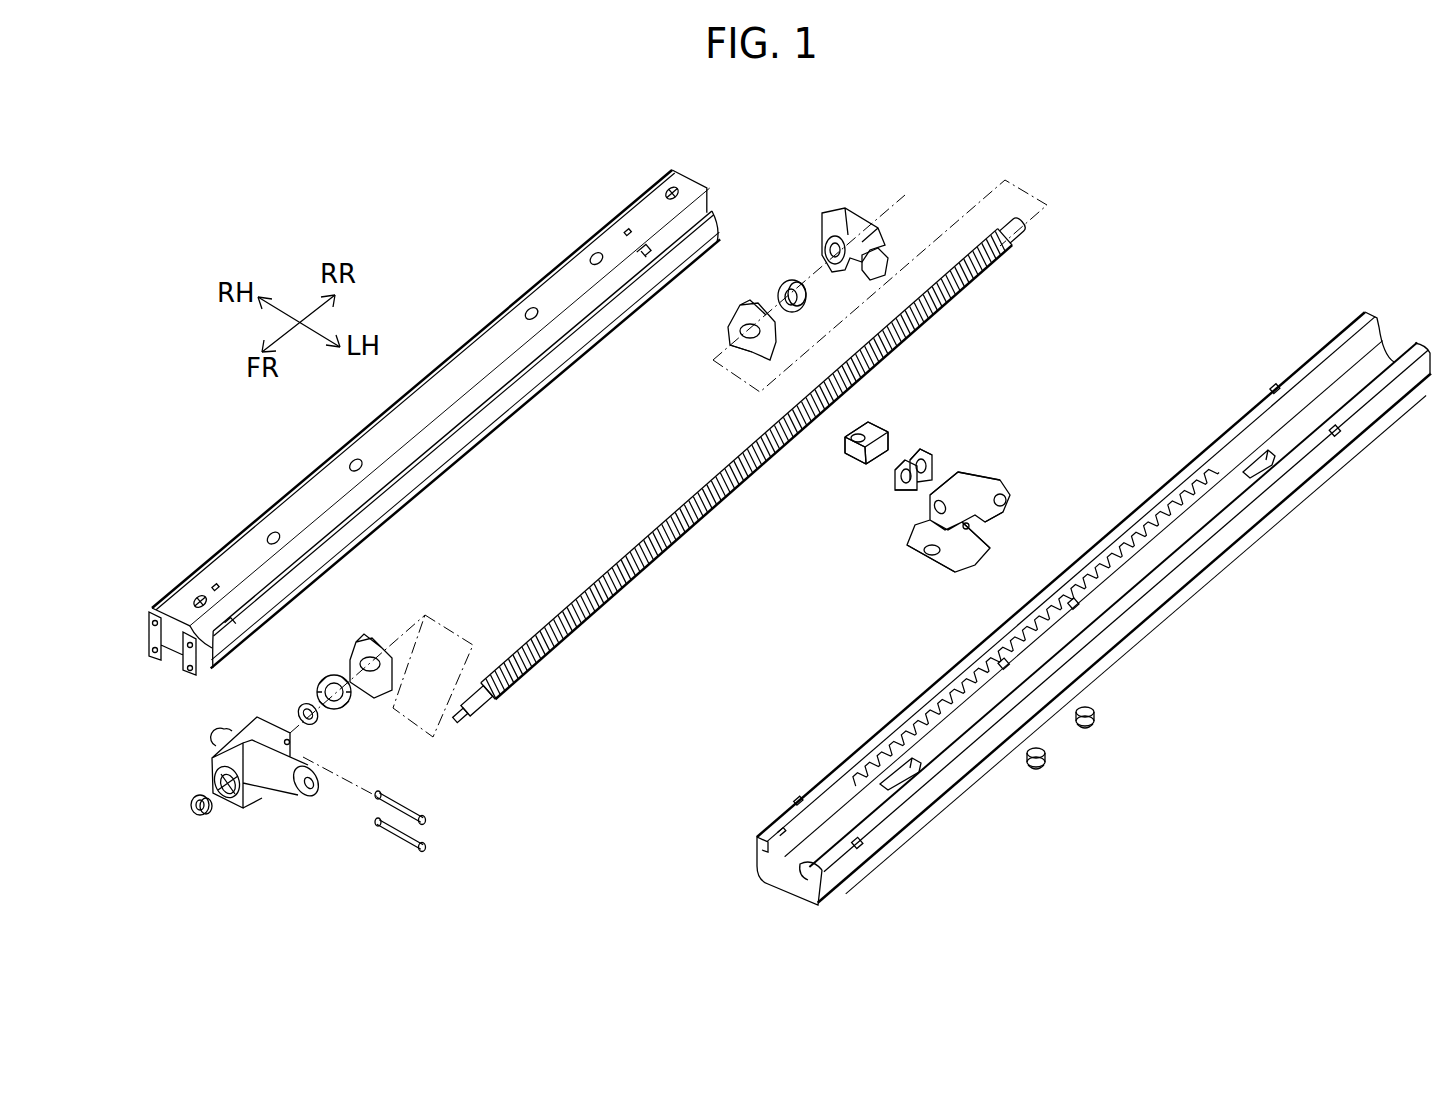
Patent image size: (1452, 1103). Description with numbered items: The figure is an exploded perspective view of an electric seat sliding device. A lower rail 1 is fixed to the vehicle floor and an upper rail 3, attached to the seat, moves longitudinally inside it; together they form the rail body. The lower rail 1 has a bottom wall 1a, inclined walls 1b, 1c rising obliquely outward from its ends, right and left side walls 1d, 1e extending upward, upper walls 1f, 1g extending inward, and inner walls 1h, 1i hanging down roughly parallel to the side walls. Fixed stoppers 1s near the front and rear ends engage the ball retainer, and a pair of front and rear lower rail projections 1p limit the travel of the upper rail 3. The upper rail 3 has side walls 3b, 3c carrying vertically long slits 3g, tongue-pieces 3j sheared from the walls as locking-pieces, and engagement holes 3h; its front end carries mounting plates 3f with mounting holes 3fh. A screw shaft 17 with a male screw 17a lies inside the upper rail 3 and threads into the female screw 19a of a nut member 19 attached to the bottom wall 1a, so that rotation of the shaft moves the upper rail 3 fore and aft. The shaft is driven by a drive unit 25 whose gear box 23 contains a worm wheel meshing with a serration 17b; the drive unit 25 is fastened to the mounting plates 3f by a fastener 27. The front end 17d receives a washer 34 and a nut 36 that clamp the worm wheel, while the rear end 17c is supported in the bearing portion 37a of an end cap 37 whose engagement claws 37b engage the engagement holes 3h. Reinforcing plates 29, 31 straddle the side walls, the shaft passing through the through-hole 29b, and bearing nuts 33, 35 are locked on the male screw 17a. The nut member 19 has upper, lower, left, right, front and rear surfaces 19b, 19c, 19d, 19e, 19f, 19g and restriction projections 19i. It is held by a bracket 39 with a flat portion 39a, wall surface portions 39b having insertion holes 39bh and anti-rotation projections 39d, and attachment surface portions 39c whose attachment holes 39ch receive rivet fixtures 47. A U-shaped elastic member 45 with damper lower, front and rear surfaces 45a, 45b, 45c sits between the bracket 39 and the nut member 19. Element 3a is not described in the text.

The lower rail 1 is at (1315, 352).
The bottom wall 1a is at (950, 772).
The inclined wall 1b is at (820, 905).
The inclined wall 1c is at (758, 872).
The side wall 1d is at (1240, 530).
The side wall 1e is at (758, 845).
The upper wall 1f is at (1305, 452).
The upper wall 1g is at (1237, 425).
The inner wall 1h is at (806, 888).
The inner wall 1i is at (780, 835).
The lower rail projection 1p is at (895, 760).
The fixed stopper 1s is at (1272, 390).
The upper rail 3 is at (537, 270).
The top wall of upper rail 3a is at (573, 273).
The side wall 3b is at (543, 346).
The side wall 3c is at (180, 626).
The mounting plate 3f is at (172, 650).
The mounting hole 3fh is at (152, 650).
The slit 3g is at (640, 263).
The engagement hole 3h is at (688, 222).
The tongue-piece 3j is at (643, 245).
The screw shaft 17 is at (633, 548).
The male screw 17a is at (706, 500).
The serration 17b is at (486, 700).
The rear end 17c is at (1028, 228).
The front end 17d is at (466, 726).
The nut member 19 is at (866, 420).
The female screw 19a is at (845, 455).
The upper surface 19b is at (882, 426).
The lower surface 19c is at (866, 462).
The left side surface 19d is at (892, 446).
The right side surface 19e is at (843, 430).
The front surface 19f is at (845, 452).
The rear surface 19g is at (884, 437).
The restriction projection 19i is at (858, 424).
The gear box 23 is at (256, 806).
The drive unit 25 is at (203, 772).
The fastener 27 is at (430, 848).
The reinforcing plate 29 is at (752, 310).
The through-hole 29b is at (732, 342).
The reinforcing plate 31 is at (372, 640).
The bearing nut 33 is at (790, 282).
The washer 34 is at (318, 720).
The bearing nut 35 is at (333, 676).
The nut 36 is at (190, 806).
The end cap 37 is at (838, 220).
The bearing portion 37a is at (860, 225).
The engagement claw 37b is at (845, 274).
The bracket 39 is at (1010, 500).
The flat portion 39a is at (966, 486).
The wall surface portion 39b is at (925, 518).
The insertion hole 39bh is at (966, 530).
The attachment surface portion 39c is at (1006, 500).
The attachment hole 39ch is at (915, 557).
The anti-rotation projection 39d is at (980, 520).
The elastic member 45 is at (932, 470).
The damper lower surface 45a is at (912, 490).
The damper front surface 45b is at (897, 485).
The damper rear surface 45c is at (926, 457).
The fixture 47 is at (1094, 727).